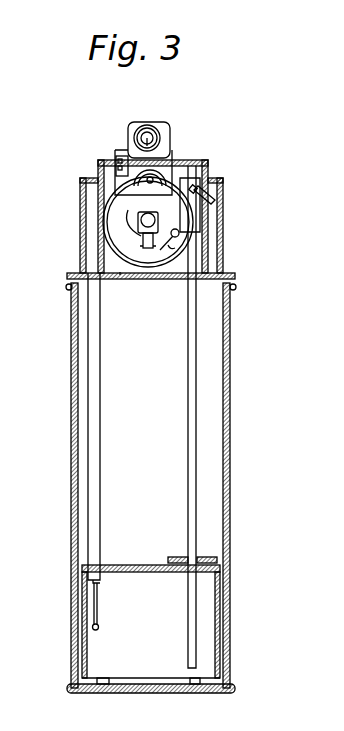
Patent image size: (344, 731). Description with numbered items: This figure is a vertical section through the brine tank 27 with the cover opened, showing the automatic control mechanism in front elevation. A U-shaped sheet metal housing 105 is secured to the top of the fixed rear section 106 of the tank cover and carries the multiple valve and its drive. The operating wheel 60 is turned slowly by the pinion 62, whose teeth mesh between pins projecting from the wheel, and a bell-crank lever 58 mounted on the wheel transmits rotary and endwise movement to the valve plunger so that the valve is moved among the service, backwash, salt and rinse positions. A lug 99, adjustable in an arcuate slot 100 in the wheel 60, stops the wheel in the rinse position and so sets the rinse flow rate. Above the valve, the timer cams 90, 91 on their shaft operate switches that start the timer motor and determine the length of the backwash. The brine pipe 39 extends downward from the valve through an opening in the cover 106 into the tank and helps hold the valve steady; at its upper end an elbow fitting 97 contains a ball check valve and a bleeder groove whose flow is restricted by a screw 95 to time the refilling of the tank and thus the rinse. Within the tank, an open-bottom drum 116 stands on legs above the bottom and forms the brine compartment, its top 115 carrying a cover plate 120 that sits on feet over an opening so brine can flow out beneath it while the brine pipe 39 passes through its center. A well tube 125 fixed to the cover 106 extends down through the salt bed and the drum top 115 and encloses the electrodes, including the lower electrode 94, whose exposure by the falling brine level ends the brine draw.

The brine tank 27 is at (232, 408).
The brine pipe 39 is at (188, 390).
The bell-crank lever 58 is at (142, 223).
The operating wheel 60 is at (120, 251).
The pinion 62 is at (168, 170).
The cam 90 is at (126, 146).
The cam 91 is at (156, 131).
The electrode 94 is at (98, 620).
The screw 95 is at (220, 203).
The elbow fitting 97 is at (208, 180).
The lug 99 is at (173, 238).
The arcuate slot 100 is at (167, 224).
The housing 105 is at (97, 165).
The rear section of cover 106 is at (125, 278).
The top of drum 115 is at (120, 572).
The drum 116 is at (82, 632).
The cover plate 120 is at (170, 557).
The well tube 125 is at (100, 468).